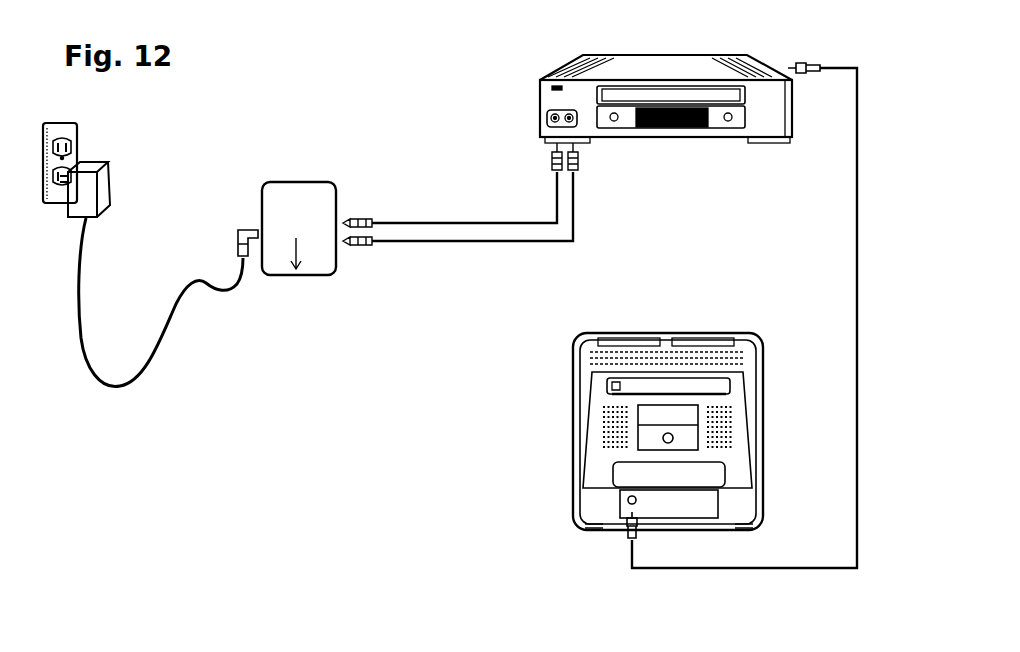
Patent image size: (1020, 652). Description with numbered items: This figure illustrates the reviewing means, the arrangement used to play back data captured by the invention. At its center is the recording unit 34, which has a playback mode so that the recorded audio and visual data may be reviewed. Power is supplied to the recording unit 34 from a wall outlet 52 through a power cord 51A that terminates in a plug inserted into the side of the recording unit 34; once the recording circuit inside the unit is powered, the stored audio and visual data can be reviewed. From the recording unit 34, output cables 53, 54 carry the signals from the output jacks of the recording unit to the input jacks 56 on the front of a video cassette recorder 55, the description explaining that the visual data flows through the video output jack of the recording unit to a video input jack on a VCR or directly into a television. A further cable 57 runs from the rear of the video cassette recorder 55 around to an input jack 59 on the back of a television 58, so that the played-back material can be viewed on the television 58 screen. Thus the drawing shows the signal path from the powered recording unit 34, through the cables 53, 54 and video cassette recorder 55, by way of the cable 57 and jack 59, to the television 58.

The wall outlet 52 is at (79, 139).
The power cord with AC adapter 51A is at (150, 355).
The recording unit 34 is at (313, 277).
The audio cable 54 is at (455, 221).
The video cable 53 is at (478, 243).
The video cassette recorder 55 is at (672, 139).
The input jacks 56 is at (547, 118).
The coaxial cable 57 is at (856, 262).
The television 58 is at (570, 438).
The antenna input jack 59 is at (624, 506).